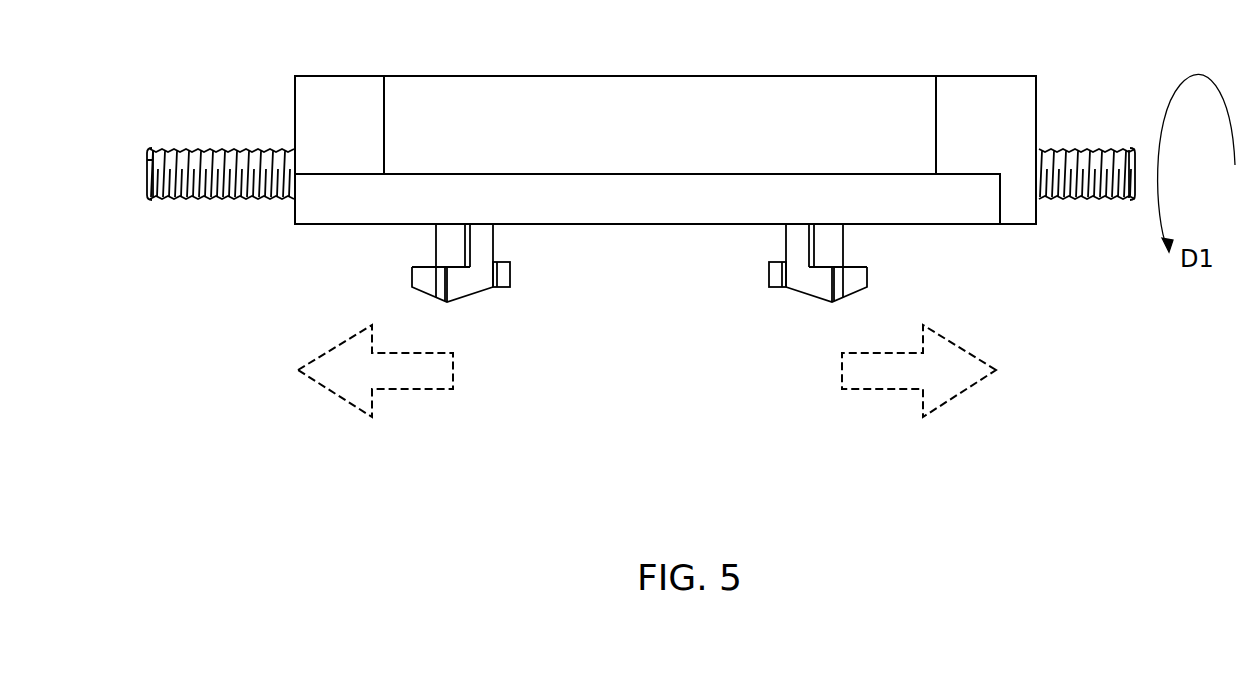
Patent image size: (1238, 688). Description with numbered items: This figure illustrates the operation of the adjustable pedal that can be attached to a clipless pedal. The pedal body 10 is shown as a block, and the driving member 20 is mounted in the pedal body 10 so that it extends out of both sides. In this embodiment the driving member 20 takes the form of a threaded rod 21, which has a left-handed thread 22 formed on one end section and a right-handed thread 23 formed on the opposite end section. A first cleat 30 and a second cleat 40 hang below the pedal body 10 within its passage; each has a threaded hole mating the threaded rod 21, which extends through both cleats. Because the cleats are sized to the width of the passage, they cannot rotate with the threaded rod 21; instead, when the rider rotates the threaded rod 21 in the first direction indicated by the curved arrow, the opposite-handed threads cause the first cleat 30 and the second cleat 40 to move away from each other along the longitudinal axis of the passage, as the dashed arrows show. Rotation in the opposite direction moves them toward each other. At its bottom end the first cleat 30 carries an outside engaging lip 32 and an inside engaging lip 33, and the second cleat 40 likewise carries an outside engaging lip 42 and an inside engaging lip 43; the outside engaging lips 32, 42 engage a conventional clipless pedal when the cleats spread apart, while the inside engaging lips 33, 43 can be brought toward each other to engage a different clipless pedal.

The pedal body 10 is at (802, 92).
The driving member 20 is at (188, 169).
The threaded rod 21 is at (165, 199).
The left-handed thread 22 is at (1116, 200).
The right-handed thread 23 is at (168, 177).
The first cleat 30 is at (426, 277).
The outside engaging lip 32 is at (423, 280).
The inside engaging lip 33 is at (505, 278).
The second cleat 40 is at (859, 275).
The outside engaging lip 42 is at (852, 278).
The inside engaging lip 43 is at (773, 275).